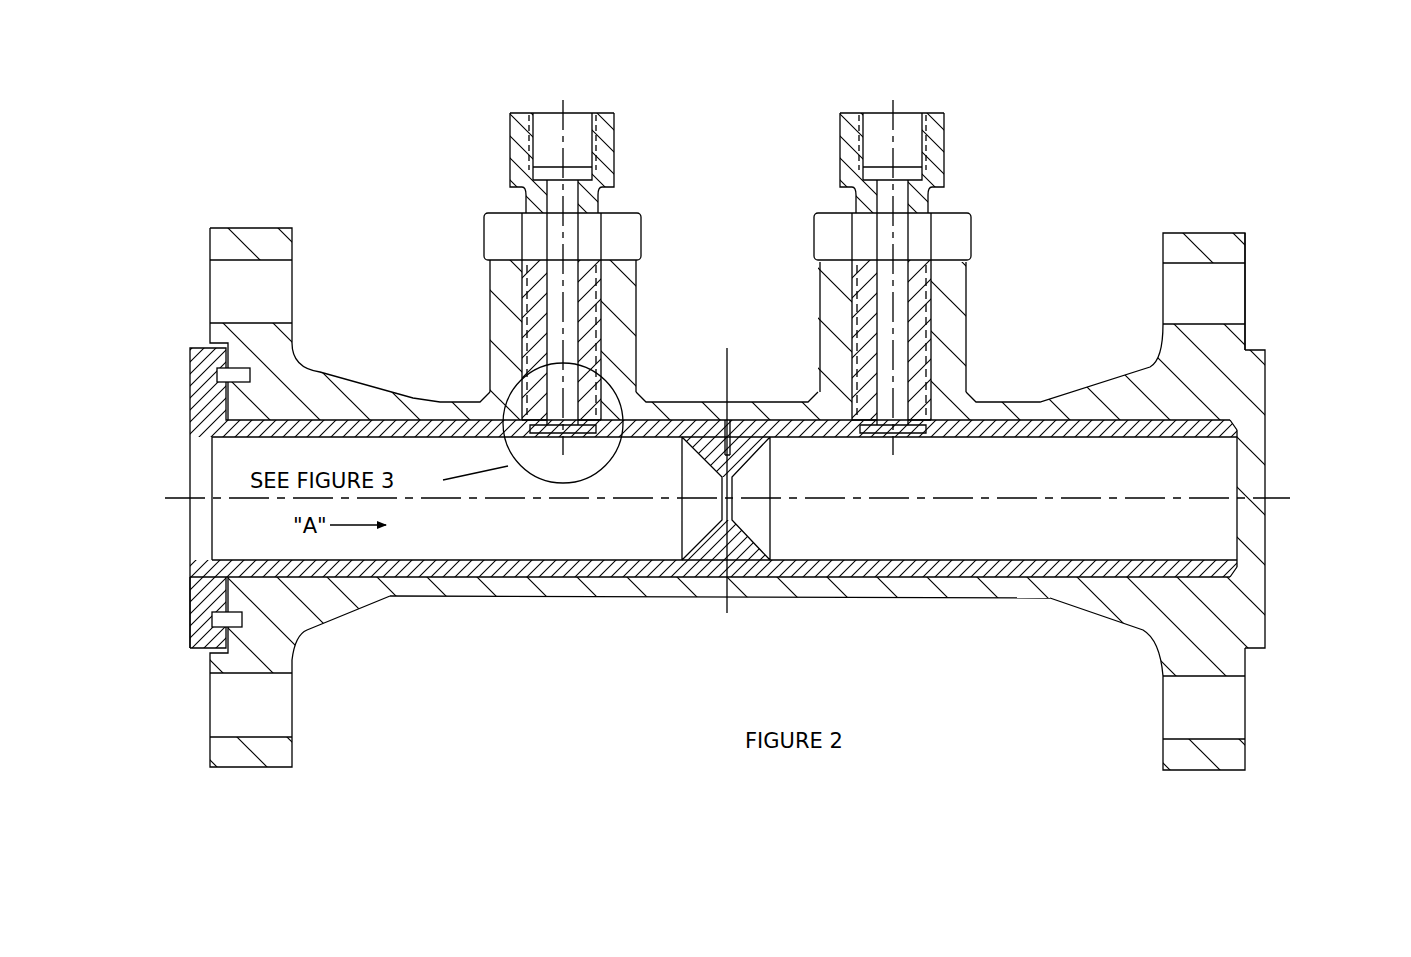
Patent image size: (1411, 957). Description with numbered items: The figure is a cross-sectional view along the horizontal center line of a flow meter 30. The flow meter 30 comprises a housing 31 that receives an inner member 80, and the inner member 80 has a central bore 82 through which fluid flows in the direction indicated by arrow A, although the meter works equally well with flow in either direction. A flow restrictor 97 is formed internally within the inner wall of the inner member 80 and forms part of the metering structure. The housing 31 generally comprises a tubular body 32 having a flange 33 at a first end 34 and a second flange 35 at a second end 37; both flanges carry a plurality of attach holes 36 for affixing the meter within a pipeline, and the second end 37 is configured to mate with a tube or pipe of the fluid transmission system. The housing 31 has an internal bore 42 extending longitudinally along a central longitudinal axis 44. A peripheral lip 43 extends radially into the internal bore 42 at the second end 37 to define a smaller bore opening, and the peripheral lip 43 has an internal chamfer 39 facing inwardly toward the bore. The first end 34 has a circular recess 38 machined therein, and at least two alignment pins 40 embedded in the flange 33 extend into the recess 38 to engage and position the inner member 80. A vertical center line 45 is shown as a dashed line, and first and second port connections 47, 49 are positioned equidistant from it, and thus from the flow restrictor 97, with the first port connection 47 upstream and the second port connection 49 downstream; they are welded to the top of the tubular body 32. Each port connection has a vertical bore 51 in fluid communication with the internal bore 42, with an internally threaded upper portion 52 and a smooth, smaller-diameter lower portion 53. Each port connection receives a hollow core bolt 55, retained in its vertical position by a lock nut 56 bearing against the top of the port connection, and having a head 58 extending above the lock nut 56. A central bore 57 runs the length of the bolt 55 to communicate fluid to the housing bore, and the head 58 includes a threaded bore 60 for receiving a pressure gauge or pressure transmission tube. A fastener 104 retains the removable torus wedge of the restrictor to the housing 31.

The flow meter 30 is at (387, 604).
The housing 31 is at (1073, 612).
The tubular body 32 is at (905, 583).
The flange 33 is at (228, 226).
The first end 34 is at (160, 240).
The second flange 35 is at (1205, 228).
The attach holes 36 is at (208, 292).
The second end 37 is at (1294, 328).
The circular recess 38 is at (205, 653).
The internal chamfer 39 is at (1234, 418).
The alignment pins 40 is at (208, 619).
The internal bore 42 is at (1268, 488).
The peripheral lip 43 is at (1268, 570).
The central longitudinal axis 44 is at (175, 500).
The vertical center line 45 is at (727, 616).
The first port connection 47 is at (638, 278).
The second port connection 49 is at (968, 270).
The vertical bore 51 is at (520, 278).
The upper portion 52 is at (619, 340).
The lower portion 53 is at (518, 378).
The hollow core bolt 55 is at (508, 150).
The lock nuts 56 is at (482, 232).
The central bore 57 is at (558, 327).
The head 58 is at (600, 108).
The threaded bore 60 is at (545, 108).
The inner member 80 is at (190, 372).
The central bore 82 is at (225, 465).
The flow restrictor 97 is at (670, 599).
The fastener 104 is at (725, 352).